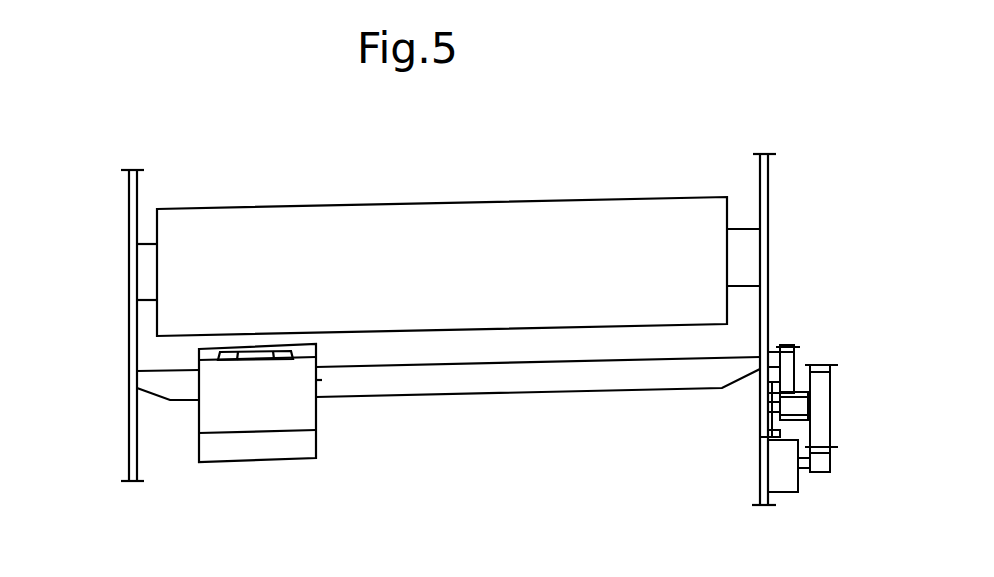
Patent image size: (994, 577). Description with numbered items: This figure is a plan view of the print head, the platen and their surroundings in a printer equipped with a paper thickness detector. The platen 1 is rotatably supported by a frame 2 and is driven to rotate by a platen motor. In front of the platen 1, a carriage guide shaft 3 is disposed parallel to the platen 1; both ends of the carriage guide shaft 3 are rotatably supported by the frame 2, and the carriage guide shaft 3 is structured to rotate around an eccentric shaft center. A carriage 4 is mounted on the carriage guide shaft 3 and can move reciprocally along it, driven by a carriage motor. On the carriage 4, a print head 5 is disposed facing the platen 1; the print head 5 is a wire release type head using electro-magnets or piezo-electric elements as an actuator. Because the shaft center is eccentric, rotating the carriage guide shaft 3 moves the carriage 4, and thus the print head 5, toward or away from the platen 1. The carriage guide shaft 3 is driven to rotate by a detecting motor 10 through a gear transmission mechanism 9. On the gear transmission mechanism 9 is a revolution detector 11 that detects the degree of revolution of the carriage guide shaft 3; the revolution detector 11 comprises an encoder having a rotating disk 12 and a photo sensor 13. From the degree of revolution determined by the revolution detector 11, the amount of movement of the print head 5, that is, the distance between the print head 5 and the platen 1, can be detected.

The platen 1 is at (397, 202).
The frame 2 is at (129, 208).
The carriage guide shaft 3 is at (473, 393).
The carriage 4 is at (251, 462).
The print head 5 is at (316, 380).
The gear transmission mechanism 9 is at (822, 345).
The detecting motor 10 is at (798, 480).
The revolution detector 11 is at (790, 428).
The rotating disk 12 is at (760, 393).
The photo sensor 13 is at (760, 437).